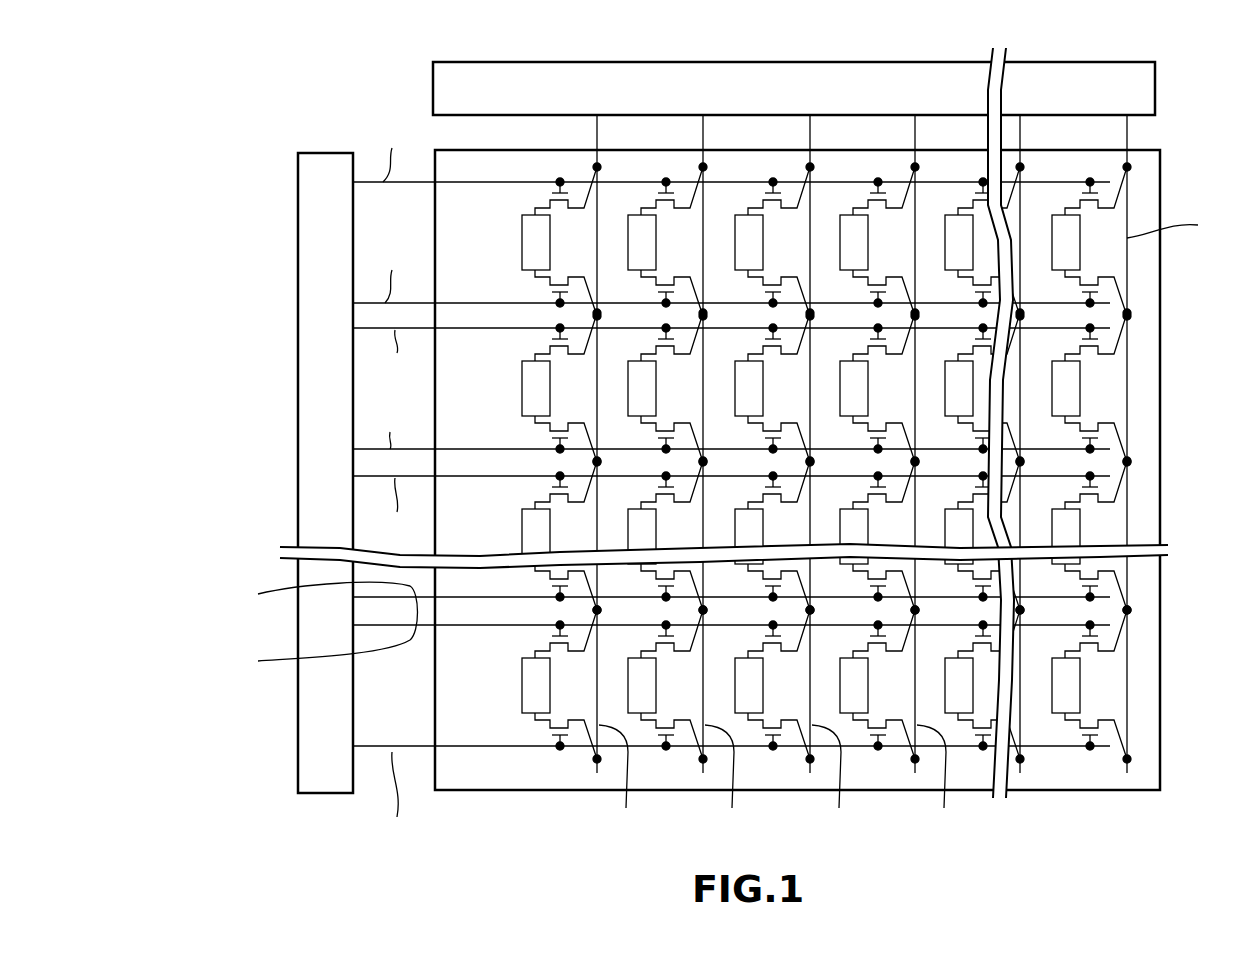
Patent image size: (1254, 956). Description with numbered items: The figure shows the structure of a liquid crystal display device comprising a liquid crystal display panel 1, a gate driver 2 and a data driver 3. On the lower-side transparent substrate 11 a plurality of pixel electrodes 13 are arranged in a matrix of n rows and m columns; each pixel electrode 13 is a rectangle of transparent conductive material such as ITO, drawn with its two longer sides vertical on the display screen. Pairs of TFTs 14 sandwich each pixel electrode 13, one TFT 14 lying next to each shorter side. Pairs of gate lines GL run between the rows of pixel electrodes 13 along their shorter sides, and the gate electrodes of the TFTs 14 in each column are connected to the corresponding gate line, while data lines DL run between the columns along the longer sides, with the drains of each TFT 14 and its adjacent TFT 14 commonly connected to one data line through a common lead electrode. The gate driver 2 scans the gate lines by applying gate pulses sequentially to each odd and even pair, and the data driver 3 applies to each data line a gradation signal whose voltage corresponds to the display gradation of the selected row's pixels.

The liquid crystal display panel 1 is at (704, 438).
The gate driver 2 is at (320, 153).
The data driver 3 is at (872, 61).
The lower-side transparent substrate 11 is at (793, 452).
The pixel electrode 13 is at (1070, 677).
The TFT 14 is at (1093, 718).